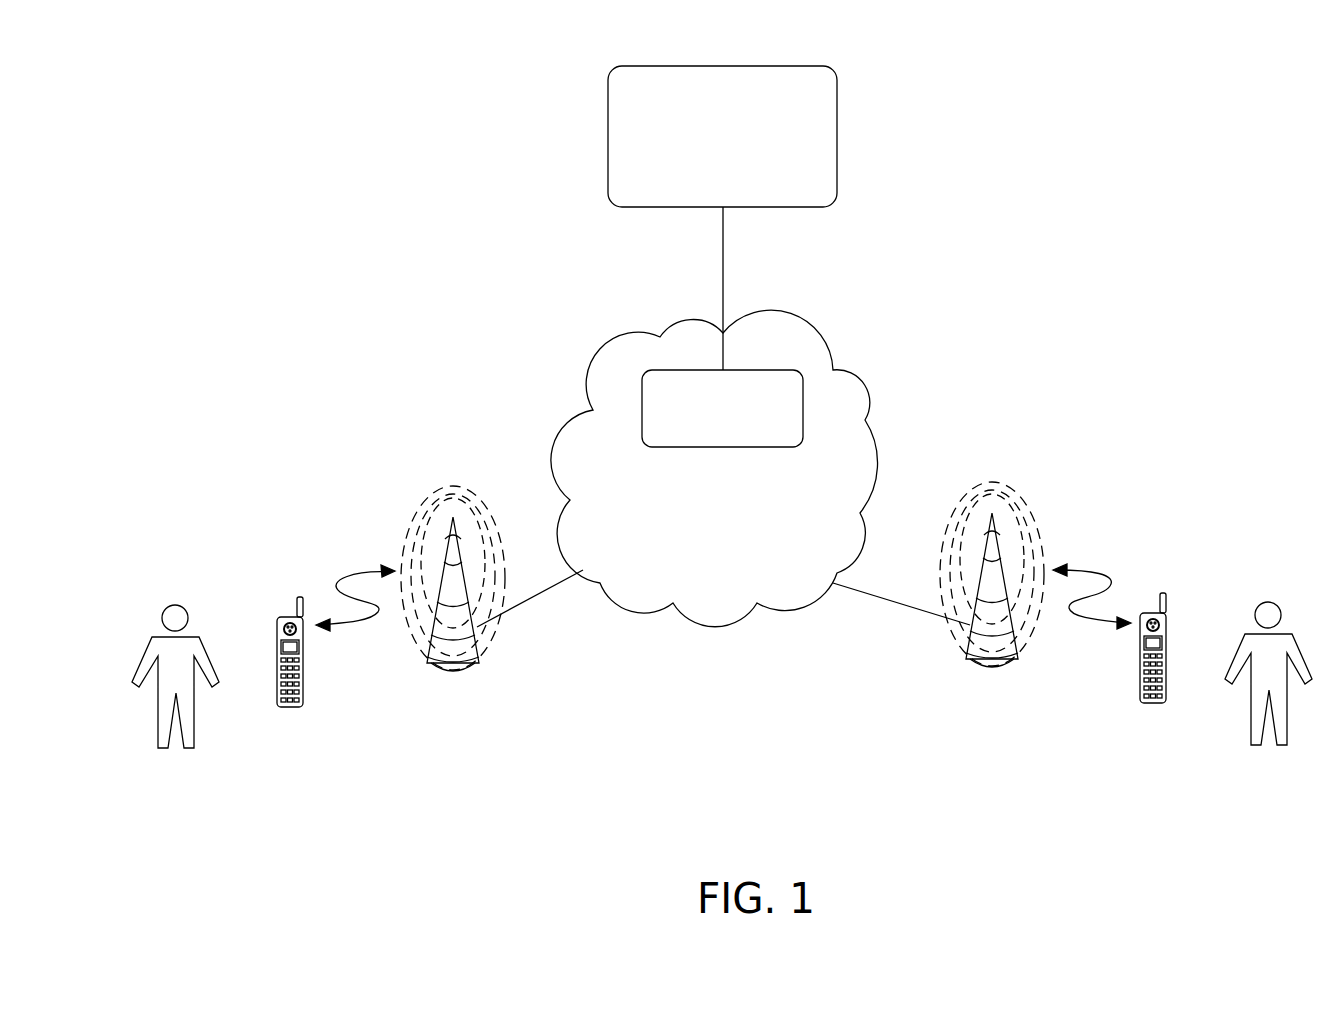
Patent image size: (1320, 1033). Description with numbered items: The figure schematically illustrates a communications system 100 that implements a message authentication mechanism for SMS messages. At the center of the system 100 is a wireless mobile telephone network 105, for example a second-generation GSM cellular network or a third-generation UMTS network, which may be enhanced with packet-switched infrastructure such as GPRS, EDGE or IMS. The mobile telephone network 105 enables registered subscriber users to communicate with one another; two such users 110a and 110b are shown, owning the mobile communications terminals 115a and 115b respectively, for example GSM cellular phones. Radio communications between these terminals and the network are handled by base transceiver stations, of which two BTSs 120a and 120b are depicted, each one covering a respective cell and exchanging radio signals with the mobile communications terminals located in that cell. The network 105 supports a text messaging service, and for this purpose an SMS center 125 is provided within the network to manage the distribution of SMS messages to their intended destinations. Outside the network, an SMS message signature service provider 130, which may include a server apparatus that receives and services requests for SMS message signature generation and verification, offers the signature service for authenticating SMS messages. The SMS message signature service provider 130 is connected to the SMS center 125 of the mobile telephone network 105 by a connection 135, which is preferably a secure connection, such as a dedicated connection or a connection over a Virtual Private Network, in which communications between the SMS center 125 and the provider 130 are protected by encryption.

The communications system 100 is at (290, 158).
The mobile telephone network 105 is at (600, 373).
The user 110a is at (180, 605).
The user 110b is at (1267, 602).
The mobile communications terminal 115a is at (288, 707).
The mobile communications terminal 115b is at (1155, 703).
The base transceiver station 120a is at (487, 647).
The base transceiver station 120b is at (953, 640).
The SMS center 125 is at (803, 398).
The SMS message signature service provider 130 is at (608, 125).
The connection 135 is at (723, 273).